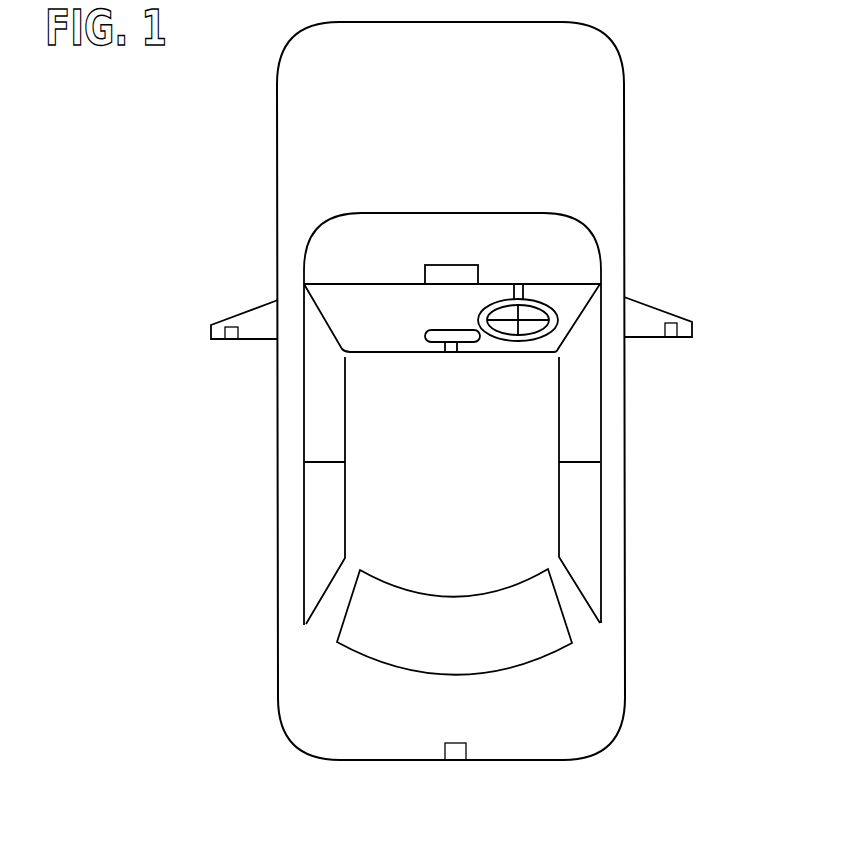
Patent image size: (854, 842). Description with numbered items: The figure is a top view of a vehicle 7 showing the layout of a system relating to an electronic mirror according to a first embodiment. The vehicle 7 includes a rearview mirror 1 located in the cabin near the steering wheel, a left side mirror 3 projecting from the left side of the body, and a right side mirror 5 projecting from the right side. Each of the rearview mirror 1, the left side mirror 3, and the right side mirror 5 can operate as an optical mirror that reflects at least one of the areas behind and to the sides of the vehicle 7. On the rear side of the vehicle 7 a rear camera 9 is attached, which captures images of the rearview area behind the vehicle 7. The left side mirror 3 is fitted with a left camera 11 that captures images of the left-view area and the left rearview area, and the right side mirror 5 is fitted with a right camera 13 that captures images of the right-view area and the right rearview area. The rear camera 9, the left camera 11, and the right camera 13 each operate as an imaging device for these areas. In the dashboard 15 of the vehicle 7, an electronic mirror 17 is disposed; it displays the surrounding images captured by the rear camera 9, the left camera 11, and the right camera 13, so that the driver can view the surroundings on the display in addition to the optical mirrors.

The rearview mirror 1 is at (470, 340).
The left side mirror 3 is at (247, 311).
The right side mirror 5 is at (657, 308).
The vehicle 7 is at (598, 131).
The rear camera 9 is at (456, 755).
The left camera 11 is at (233, 340).
The right camera 13 is at (673, 338).
The dashboard 15 is at (573, 258).
The electronic mirror 17 is at (452, 270).